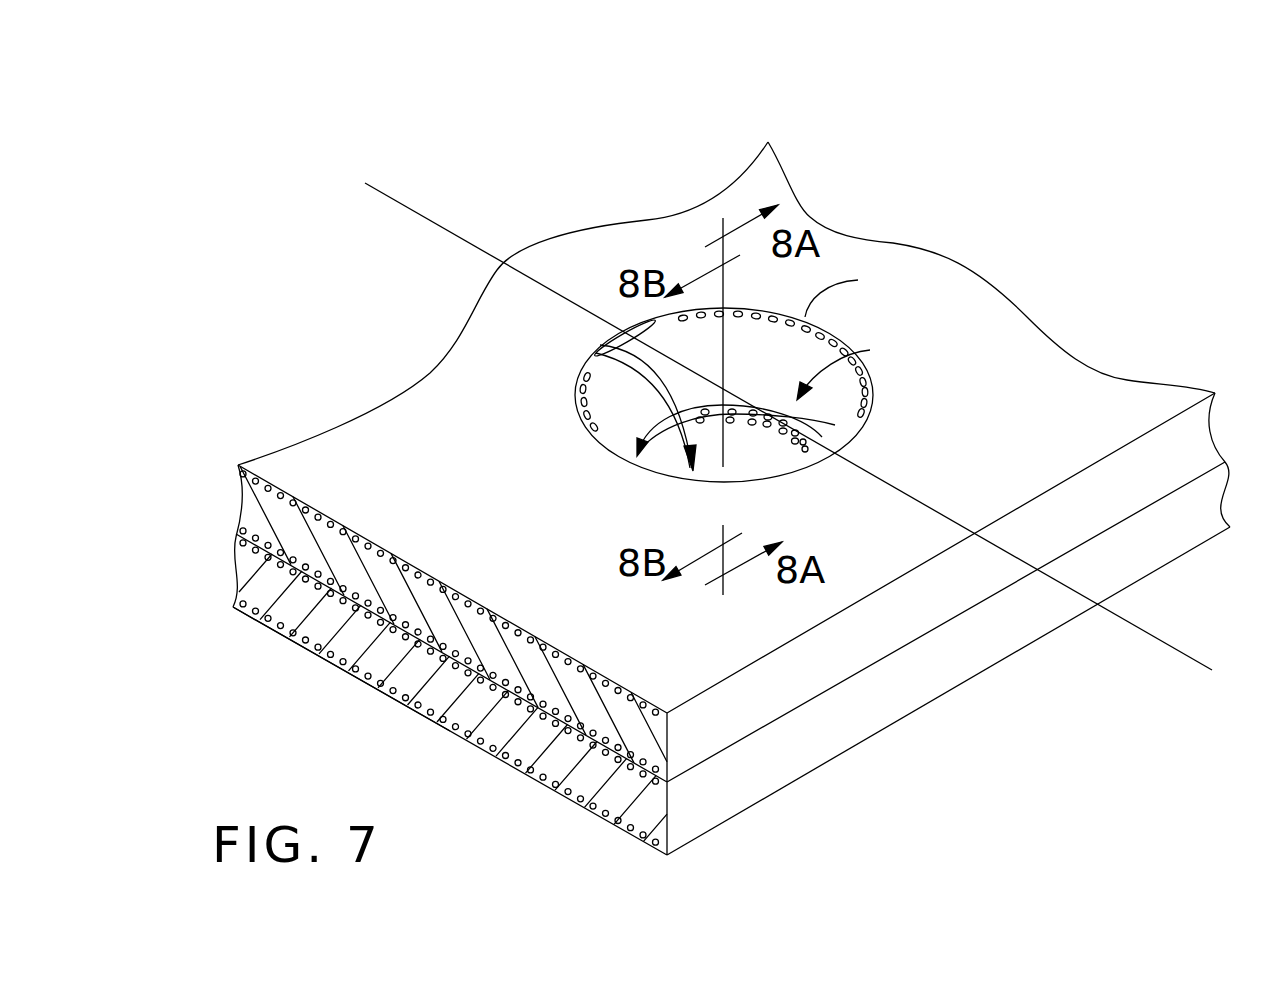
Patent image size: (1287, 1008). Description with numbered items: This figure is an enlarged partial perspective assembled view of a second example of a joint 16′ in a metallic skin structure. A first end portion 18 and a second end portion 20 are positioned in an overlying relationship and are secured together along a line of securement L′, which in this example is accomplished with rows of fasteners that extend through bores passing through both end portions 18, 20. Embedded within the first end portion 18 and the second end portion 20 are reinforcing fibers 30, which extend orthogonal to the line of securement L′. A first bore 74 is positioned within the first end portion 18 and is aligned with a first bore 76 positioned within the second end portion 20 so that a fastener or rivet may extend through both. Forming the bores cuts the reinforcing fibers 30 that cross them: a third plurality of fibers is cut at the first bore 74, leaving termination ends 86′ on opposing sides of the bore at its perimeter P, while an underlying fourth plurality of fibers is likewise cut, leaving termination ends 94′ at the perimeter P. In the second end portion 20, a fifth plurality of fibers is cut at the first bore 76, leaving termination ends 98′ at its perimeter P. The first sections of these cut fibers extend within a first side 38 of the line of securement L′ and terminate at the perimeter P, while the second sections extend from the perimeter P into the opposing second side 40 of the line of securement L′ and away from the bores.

The joint 16′ is at (461, 144).
The first end portion 18 is at (870, 648).
The second end portion 20 is at (750, 793).
The reinforcing fiber 30 is at (293, 498).
The first side 38 is at (1187, 292).
The second side 40 is at (222, 759).
The first bore 74 is at (870, 350).
The first bore 76 is at (597, 352).
The termination ends 86′ is at (742, 313).
The termination ends 94′ is at (736, 455).
The termination ends 98′ is at (653, 323).
The perimeter P is at (628, 463).
The line of securement L′ is at (1186, 654).